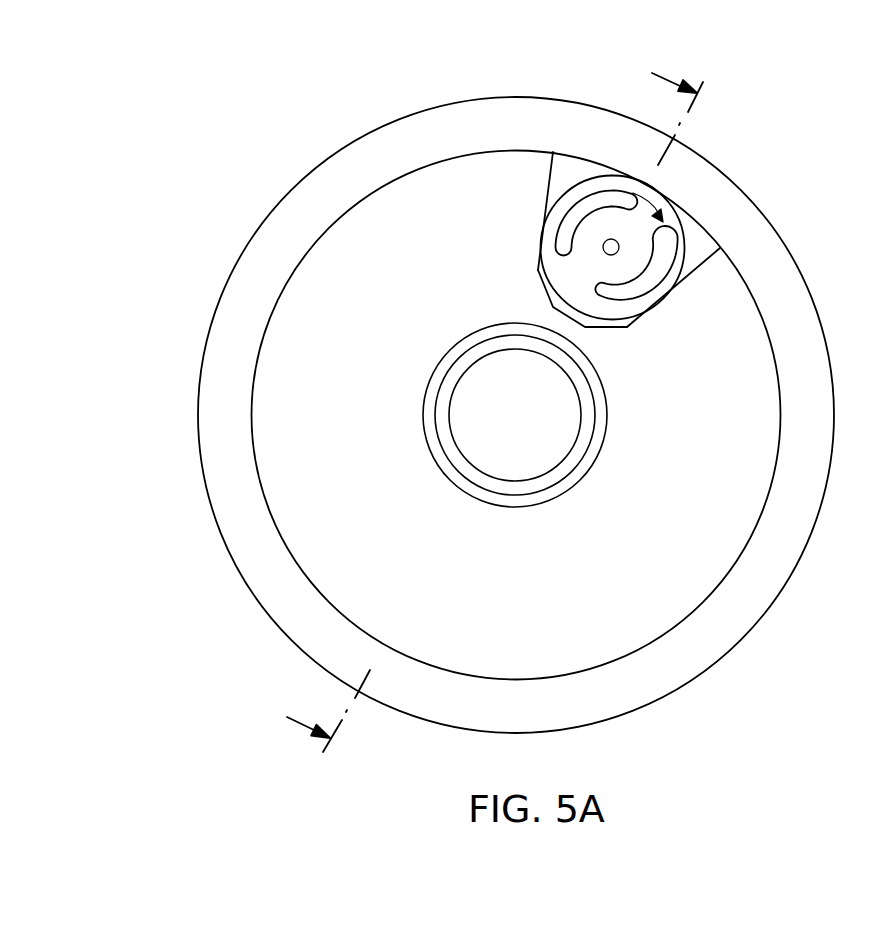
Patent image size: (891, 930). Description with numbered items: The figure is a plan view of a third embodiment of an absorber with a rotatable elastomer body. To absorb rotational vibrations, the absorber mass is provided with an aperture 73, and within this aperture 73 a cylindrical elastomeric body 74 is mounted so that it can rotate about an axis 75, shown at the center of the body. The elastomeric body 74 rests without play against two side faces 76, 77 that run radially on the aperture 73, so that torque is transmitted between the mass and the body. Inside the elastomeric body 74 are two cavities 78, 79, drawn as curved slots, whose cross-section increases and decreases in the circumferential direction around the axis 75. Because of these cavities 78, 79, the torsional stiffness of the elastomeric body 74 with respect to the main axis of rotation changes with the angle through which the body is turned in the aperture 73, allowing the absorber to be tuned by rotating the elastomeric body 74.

The aperture 73 is at (573, 170).
The cylindrical elastomeric body 74 is at (600, 212).
The axis 75 is at (617, 252).
The side face 76 is at (550, 208).
The side face 77 is at (702, 260).
The cavity 78 is at (610, 292).
The cavity 79 is at (556, 240).